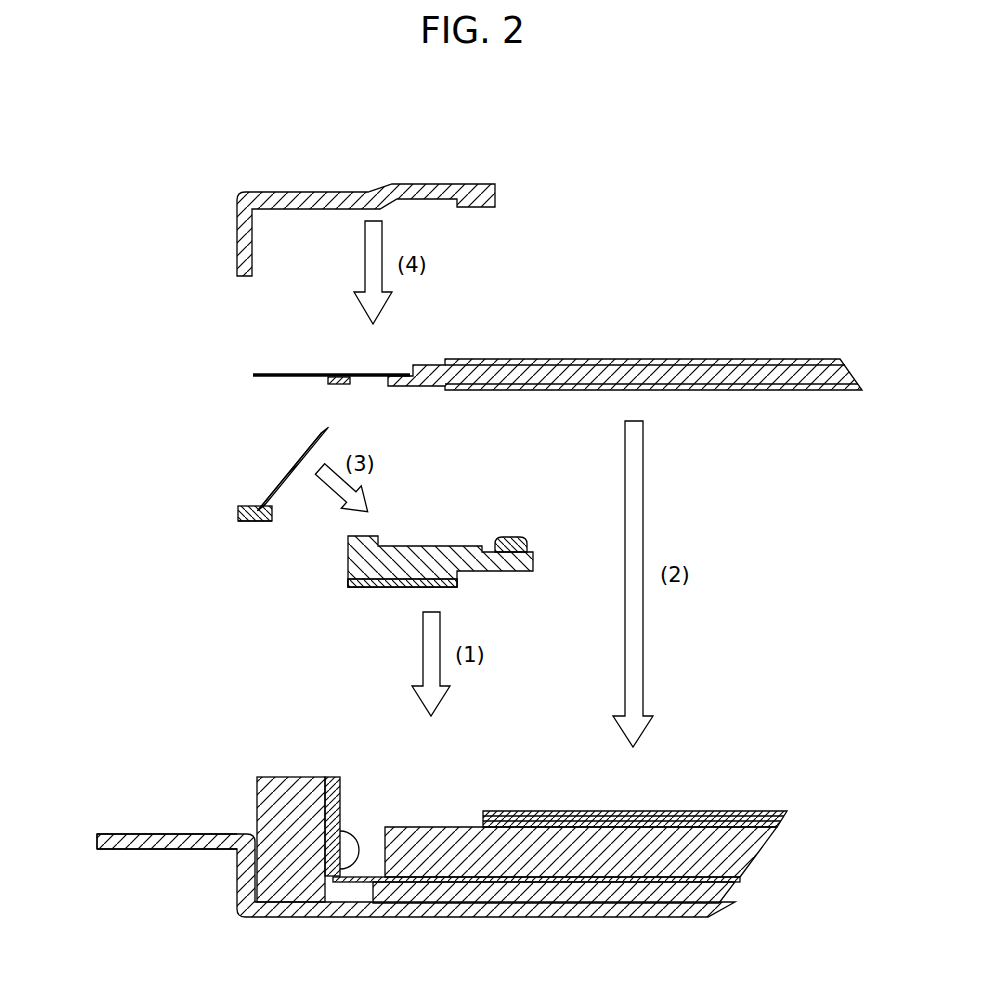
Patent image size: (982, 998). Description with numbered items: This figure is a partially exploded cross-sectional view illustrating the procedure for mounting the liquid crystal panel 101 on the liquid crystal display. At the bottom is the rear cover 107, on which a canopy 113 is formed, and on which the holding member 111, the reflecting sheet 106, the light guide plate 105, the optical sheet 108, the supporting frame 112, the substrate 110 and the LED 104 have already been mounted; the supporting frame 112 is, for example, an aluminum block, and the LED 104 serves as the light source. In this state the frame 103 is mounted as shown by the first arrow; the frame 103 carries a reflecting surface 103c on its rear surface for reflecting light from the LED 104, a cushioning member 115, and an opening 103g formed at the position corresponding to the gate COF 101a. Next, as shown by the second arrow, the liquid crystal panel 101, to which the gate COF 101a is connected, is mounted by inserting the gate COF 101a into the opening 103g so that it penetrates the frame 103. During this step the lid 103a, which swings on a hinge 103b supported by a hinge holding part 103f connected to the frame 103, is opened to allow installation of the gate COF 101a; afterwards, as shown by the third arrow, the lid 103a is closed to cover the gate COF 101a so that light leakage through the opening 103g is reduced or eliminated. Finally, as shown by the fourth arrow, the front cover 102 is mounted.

The liquid crystal panel 101 is at (676, 373).
The gate chip on film (COF) 101a is at (300, 375).
The front cover 102 is at (265, 200).
The frame 103 is at (417, 560).
The lid 103a is at (292, 468).
The hinge 103b is at (250, 507).
The reflecting surface 103c is at (374, 590).
The hinge holding part 103f is at (247, 528).
The opening 103g is at (295, 492).
The light emitting diode (LED) 104 is at (355, 847).
The light guide plate 105 is at (747, 852).
The reflecting sheet 106 is at (363, 905).
The rear cover 107 is at (547, 912).
The optical sheet 108 is at (787, 813).
The substrate 110 is at (337, 788).
The holding member 111 is at (720, 890).
The supporting frame 112 is at (272, 805).
The canopy 113 is at (133, 845).
The cushioning member 115 is at (503, 539).